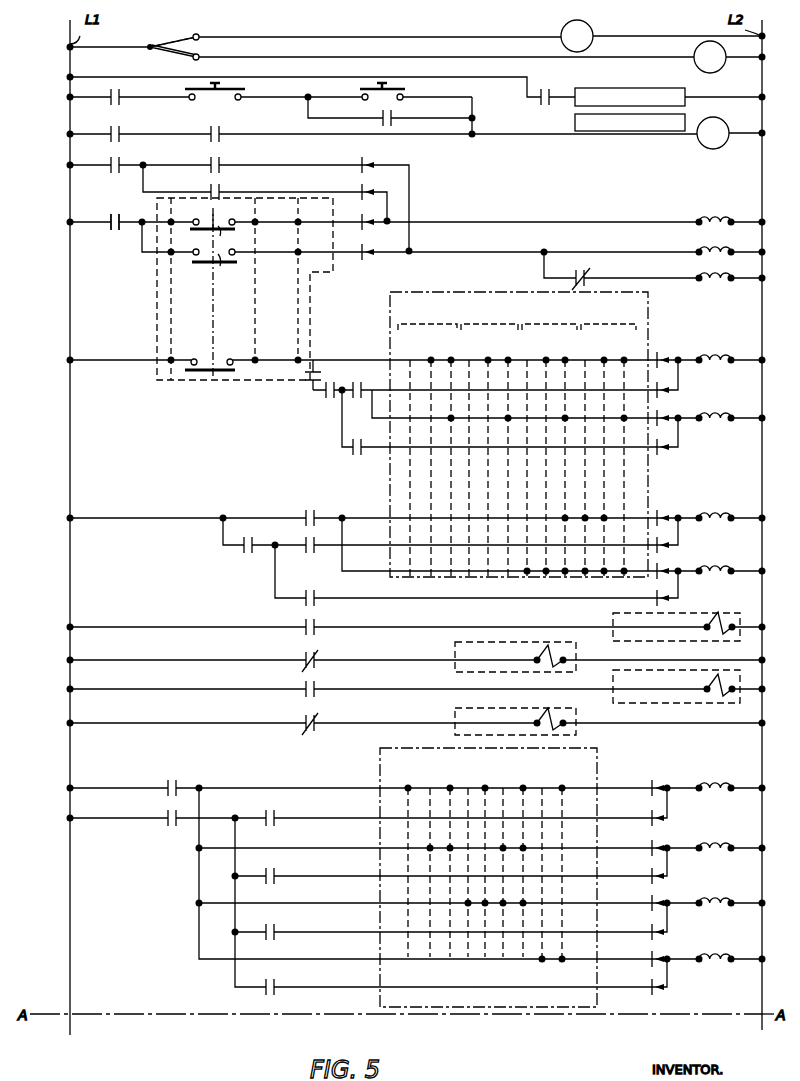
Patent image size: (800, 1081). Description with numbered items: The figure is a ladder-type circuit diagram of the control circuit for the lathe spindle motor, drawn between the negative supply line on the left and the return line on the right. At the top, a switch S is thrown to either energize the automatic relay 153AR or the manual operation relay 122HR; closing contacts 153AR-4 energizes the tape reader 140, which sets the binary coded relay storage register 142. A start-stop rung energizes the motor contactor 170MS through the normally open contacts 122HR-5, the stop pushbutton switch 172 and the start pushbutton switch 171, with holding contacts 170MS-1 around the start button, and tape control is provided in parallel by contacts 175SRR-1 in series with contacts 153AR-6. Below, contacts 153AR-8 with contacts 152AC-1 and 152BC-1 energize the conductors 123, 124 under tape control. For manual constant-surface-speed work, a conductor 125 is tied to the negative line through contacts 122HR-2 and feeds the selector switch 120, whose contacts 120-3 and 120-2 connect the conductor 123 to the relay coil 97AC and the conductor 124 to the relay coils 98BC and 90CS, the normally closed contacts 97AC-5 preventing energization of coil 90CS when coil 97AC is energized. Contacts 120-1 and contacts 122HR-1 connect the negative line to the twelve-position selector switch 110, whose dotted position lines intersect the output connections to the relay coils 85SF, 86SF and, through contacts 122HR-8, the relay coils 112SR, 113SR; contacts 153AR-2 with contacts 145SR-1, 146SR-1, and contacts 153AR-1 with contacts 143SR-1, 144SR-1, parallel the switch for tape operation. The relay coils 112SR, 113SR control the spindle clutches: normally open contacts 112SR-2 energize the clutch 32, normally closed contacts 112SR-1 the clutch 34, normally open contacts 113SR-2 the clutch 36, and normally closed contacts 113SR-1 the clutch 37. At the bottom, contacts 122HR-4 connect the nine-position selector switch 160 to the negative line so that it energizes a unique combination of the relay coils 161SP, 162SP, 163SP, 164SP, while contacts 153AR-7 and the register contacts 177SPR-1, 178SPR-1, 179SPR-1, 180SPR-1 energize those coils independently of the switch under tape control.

The switch S is at (142, 50).
The automatic relay 153AR is at (585, 33).
The manual operation relay 122HR is at (704, 70).
The contacts 153AR-4 is at (546, 88).
The tape reader 140 is at (648, 88).
The relay storage register 142 is at (575, 123).
The contacts 122HR-5 is at (120, 92).
The stop pushbutton switch 172 is at (226, 104).
The pushbutton switch 171 is at (392, 102).
The contacts 170MS-1 is at (384, 112).
The contacts 153AR-6 is at (120, 130).
The contacts 175SRR-1 is at (222, 140).
The motor contactor 170MS is at (705, 145).
The contacts 153AR-8 is at (120, 161).
The contacts 152AC-1 is at (222, 172).
The contacts 152BC-1 is at (222, 186).
The conductor 125 is at (124, 235).
The contacts 122HR-2 is at (106, 212).
The conductor 123 is at (448, 224).
The conductor 124 is at (447, 255).
The relay coil 97AC is at (720, 216).
The relay coil 98BC is at (718, 247).
The relay coil 90CS is at (718, 274).
The contacts 97AC-5 is at (584, 272).
The selector switch 120 is at (211, 304).
The contacts 120-1 is at (207, 372).
The contacts 120-2 is at (220, 265).
The contacts 120-3 is at (219, 231).
The relay coil 85SF is at (728, 346).
The relay coil 86SF is at (728, 404).
The contacts 122HR-1 is at (318, 352).
The contacts 153AR-2 is at (326, 397).
The contacts 145SR-1 is at (352, 400).
The contacts 146SR-1 is at (350, 455).
The selector switch 110 is at (400, 480).
The contacts 122HR-8 is at (308, 509).
The contacts 143SR-1 is at (306, 543).
The contacts 153AR-1 is at (244, 557).
The contacts 144SR-1 is at (316, 596).
The relay coil 112SR is at (737, 499).
The relay coil 113SR is at (737, 553).
The contacts 112SR-2 is at (316, 623).
The contacts 112SR-1 is at (316, 656).
The contacts 113SR-2 is at (316, 685).
The contacts 113SR-1 is at (316, 719).
The spindle clutch 32 is at (715, 615).
The spindle clutch 34 is at (566, 652).
The spindle clutch 36 is at (716, 676).
The spindle clutch 37 is at (566, 715).
The contacts 122HR-4 is at (172, 786).
The contacts 153AR-7 is at (178, 836).
The contacts 177SPR-1 is at (308, 810).
The contacts 178SPR-1 is at (272, 868).
The contacts 179SPR-1 is at (272, 924).
The contacts 180SPR-1 is at (272, 979).
The selector switch 160 is at (495, 988).
The relay coil 161SP is at (732, 767).
The relay coil 162SP is at (732, 828).
The relay coil 163SP is at (732, 883).
The relay coil 164SP is at (732, 939).